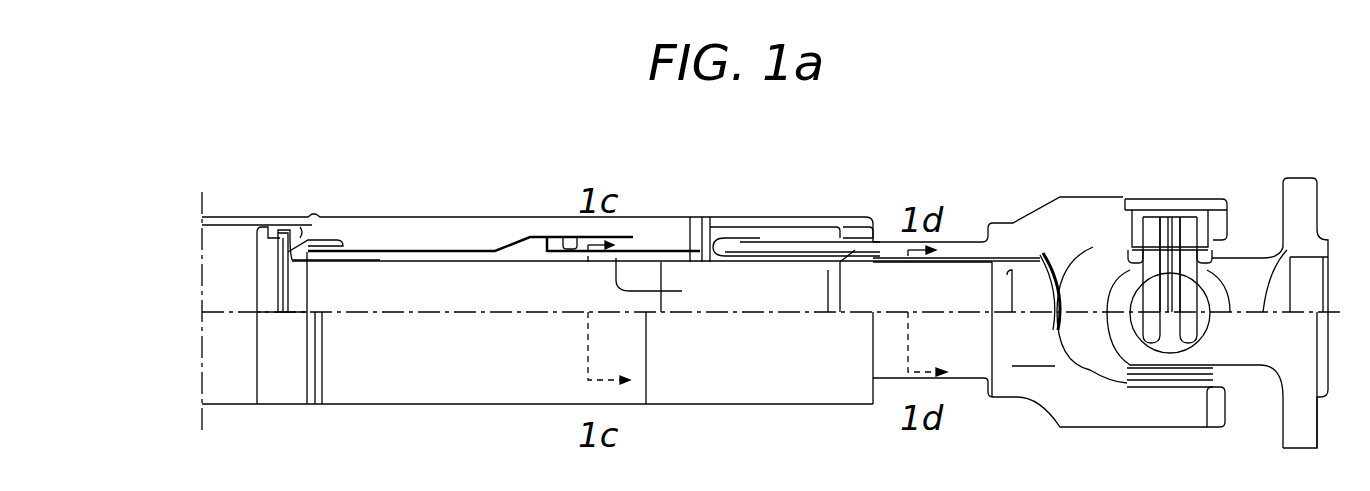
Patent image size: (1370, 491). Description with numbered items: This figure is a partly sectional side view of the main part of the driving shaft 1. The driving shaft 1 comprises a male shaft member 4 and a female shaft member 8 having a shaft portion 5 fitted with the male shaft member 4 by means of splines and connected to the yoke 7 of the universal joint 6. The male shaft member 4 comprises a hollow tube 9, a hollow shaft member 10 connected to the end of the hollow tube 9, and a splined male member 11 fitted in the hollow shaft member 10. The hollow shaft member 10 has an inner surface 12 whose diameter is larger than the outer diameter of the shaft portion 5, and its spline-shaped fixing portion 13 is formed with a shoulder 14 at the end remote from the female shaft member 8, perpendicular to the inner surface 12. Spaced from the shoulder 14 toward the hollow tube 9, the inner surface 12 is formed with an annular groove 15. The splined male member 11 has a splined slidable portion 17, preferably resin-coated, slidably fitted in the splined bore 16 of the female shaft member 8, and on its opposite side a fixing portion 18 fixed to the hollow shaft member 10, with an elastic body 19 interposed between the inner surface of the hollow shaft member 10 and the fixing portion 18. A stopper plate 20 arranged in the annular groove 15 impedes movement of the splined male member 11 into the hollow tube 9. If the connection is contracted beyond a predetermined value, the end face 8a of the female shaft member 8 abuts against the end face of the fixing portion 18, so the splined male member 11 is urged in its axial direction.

The driving shaft 1 is at (432, 158).
The male shaft member 4 is at (372, 190).
The shaft portion 5 is at (970, 245).
The universal joint 6 is at (1118, 172).
The yoke 7 is at (1087, 210).
The female shaft member 8 is at (1025, 180).
The end face 8a is at (718, 244).
The hollow tube 9 is at (224, 216).
The hollow shaft member 10 is at (457, 217).
The splined male member 11 is at (630, 248).
The inner surface 12 is at (300, 238).
The spline-shaped fixing portion 13 is at (406, 235).
The shoulder 14 is at (334, 240).
The annular groove 15 is at (278, 235).
The splined bore 16 is at (1023, 275).
The splined slidable portion 17 is at (882, 273).
The fixing portion 18 is at (547, 237).
The elastic body 19 is at (640, 245).
The stopper plate 20 is at (268, 300).